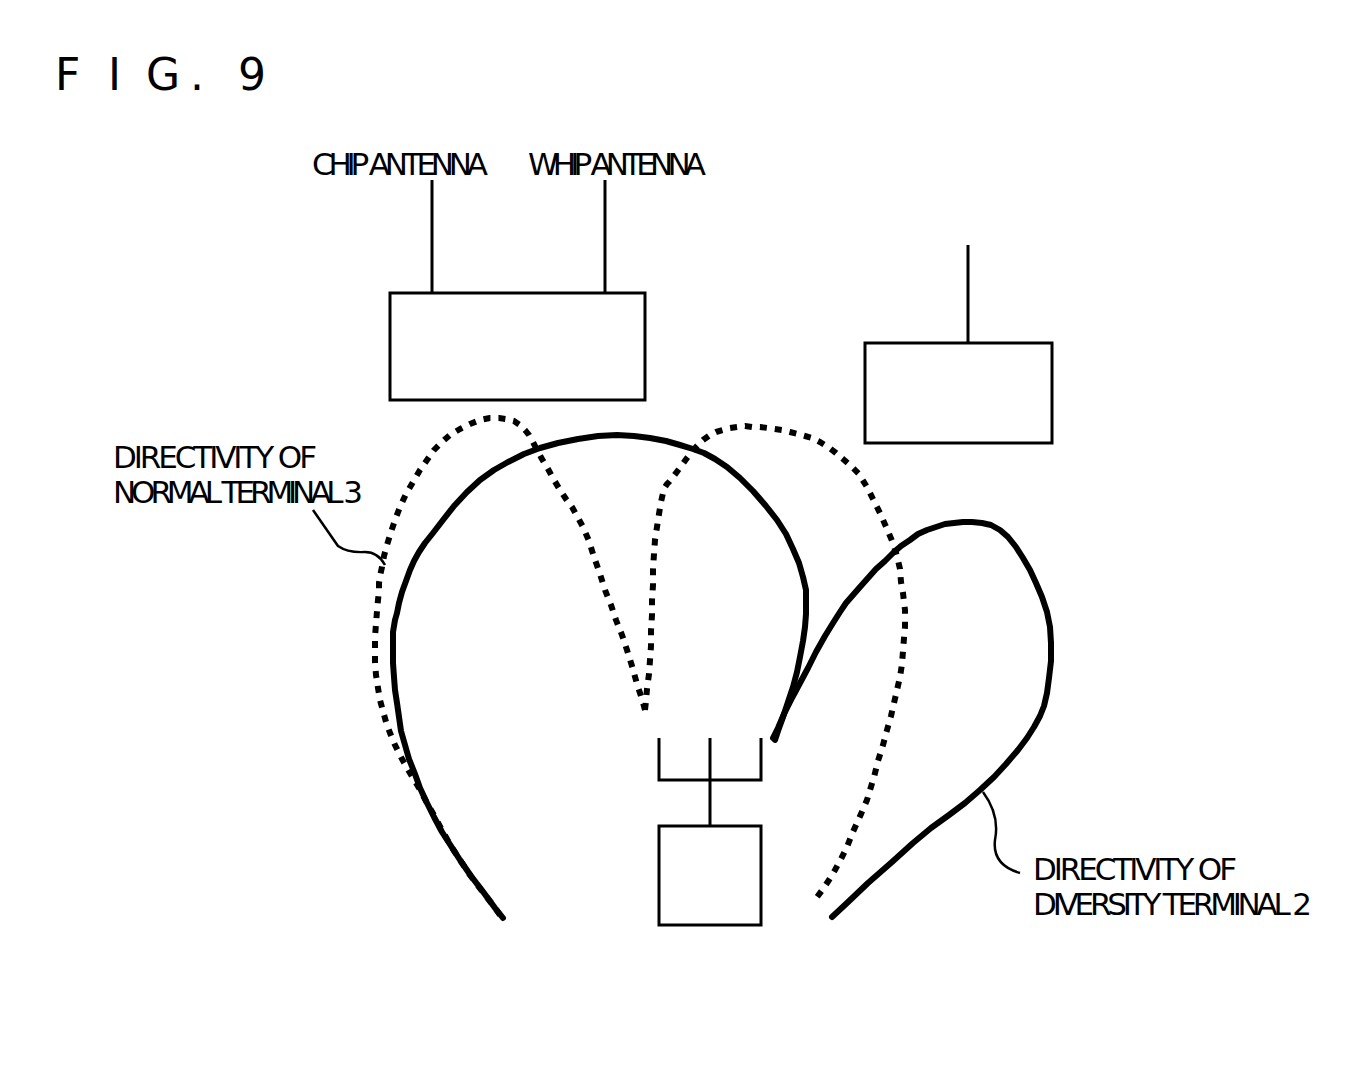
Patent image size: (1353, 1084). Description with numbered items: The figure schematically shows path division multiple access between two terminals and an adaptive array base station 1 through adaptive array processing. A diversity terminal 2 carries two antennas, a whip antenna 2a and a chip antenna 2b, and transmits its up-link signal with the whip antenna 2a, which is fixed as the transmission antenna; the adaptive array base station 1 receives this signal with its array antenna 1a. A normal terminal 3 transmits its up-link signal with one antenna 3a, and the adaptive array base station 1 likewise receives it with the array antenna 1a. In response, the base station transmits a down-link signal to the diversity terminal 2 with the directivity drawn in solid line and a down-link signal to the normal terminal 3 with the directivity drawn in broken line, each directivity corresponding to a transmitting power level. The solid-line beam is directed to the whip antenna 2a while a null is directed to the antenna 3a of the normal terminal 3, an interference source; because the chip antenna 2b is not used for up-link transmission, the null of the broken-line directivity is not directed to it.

The adaptive array base station 1 is at (659, 875).
The array antenna 1a is at (659, 762).
The diversity terminal 2 is at (390, 338).
The whip antenna 2a is at (605, 228).
The chip antenna 2b is at (432, 228).
The normal terminal 3 is at (865, 373).
The antenna 3a is at (968, 290).